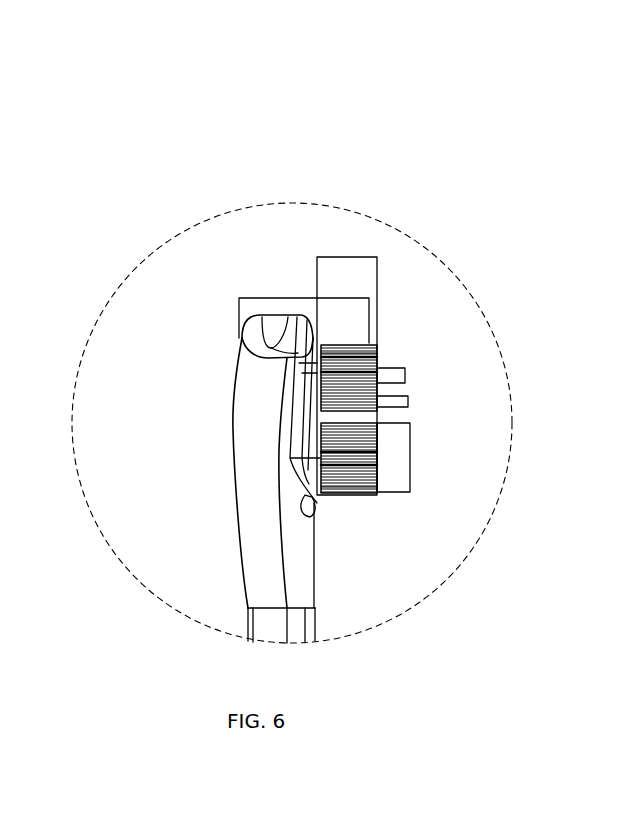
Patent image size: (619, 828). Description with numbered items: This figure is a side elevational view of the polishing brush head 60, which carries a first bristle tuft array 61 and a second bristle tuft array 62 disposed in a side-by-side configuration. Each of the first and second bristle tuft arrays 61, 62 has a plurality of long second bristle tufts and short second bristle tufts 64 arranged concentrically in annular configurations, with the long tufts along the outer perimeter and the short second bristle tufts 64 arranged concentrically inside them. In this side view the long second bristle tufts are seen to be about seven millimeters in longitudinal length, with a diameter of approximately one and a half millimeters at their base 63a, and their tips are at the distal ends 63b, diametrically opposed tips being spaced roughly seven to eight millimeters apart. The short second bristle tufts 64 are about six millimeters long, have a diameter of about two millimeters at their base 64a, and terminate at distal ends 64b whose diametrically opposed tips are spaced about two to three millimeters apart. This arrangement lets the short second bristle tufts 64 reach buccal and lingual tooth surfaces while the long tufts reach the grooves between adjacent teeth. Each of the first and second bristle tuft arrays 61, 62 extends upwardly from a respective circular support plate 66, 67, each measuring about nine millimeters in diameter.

The polishing brush head 60 is at (367, 219).
The first bristle tuft array 61 is at (381, 357).
The second bristle tuft array 62 is at (382, 500).
The base of long second bristle tuft 63a is at (408, 403).
The distal end of long second bristle tuft 63b is at (378, 470).
The short second bristle tuft 64 is at (355, 352).
The base of short second bristle tuft 64a is at (403, 377).
The distal end of short second bristle tuft 64b is at (378, 457).
The circular support plate 66 is at (327, 343).
The circular support plate 67 is at (308, 500).